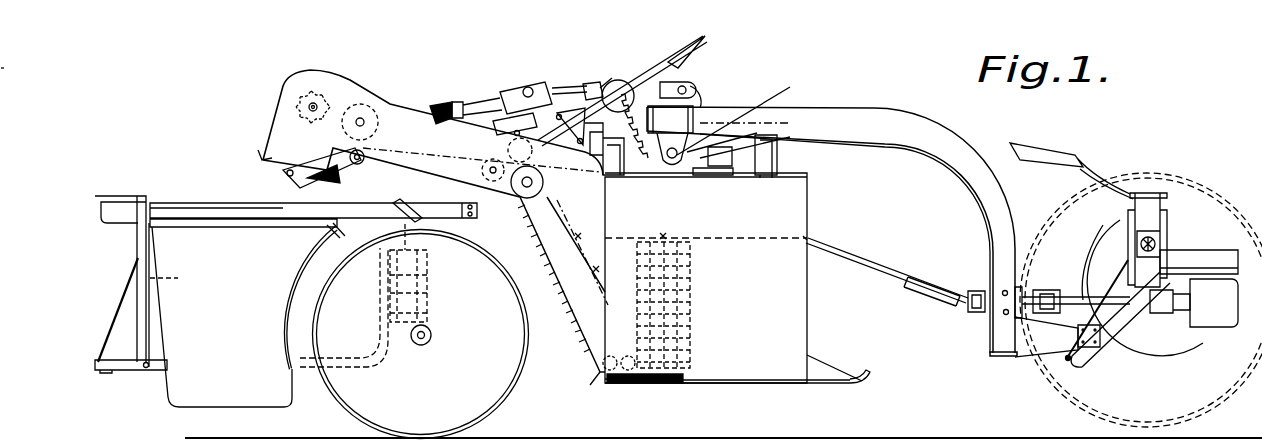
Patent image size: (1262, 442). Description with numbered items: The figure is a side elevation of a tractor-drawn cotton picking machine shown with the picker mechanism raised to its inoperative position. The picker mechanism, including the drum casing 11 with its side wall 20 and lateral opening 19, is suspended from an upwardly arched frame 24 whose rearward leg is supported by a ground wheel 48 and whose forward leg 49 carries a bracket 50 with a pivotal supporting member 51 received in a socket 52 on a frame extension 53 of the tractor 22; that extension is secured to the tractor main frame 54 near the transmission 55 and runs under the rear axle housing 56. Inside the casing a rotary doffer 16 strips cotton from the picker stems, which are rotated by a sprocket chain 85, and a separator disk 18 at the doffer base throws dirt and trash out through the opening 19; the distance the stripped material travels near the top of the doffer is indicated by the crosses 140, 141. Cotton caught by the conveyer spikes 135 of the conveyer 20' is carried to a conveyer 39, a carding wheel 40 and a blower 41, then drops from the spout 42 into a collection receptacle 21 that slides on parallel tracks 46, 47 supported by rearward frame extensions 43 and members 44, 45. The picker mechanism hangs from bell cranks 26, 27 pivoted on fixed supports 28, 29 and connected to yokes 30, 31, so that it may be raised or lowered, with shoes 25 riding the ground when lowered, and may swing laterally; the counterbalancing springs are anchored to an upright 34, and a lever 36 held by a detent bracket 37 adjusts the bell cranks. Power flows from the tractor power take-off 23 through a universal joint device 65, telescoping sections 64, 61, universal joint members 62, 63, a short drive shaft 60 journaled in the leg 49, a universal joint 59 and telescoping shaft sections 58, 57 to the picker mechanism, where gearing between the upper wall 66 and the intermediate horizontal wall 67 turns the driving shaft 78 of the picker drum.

The drum casing 11 is at (808, 328).
The rotary doffer 16 is at (693, 310).
The separator disk 18 is at (612, 385).
The lateral opening 19 is at (592, 380).
The side wall 20 is at (726, 278).
The conveyer 20' is at (441, 260).
The collection receptacle 21 is at (193, 315).
The tractor 22 is at (1140, 192).
The power take-off 23 is at (1210, 322).
The arched frame 24 is at (848, 110).
The shoe 25 is at (870, 378).
The bell crank 26 is at (700, 92).
The bell crank 27 is at (533, 78).
The fixed frame support 28 is at (470, 92).
The fixed frame support 29 is at (680, 160).
The yoke 30 is at (660, 140).
The yoke 31 is at (630, 176).
The upright 34 is at (855, 172).
The lever 36 is at (680, 50).
The detent bracket 37 is at (608, 78).
The conveyer 39 is at (445, 152).
The carding wheel 40 is at (372, 104).
The blower 41 is at (292, 97).
The spout 42 is at (258, 152).
The rearward frame extension 43 is at (337, 176).
The frame member 44 is at (120, 297).
The frame member 45 is at (150, 372).
The track 46 is at (303, 237).
The track 47 is at (150, 215).
The ground wheel 48 is at (527, 372).
The forward leg 49 is at (1003, 257).
The bracket 50 is at (1035, 340).
The pivotal supporting member 51 is at (1040, 375).
The socket 52 is at (575, 84).
The frame extension 53 is at (440, 106).
The main frame 54 is at (1200, 265).
The transmission 55 is at (500, 88).
The rear axle housing 56 is at (1155, 212).
The telescoping shaft section 57 is at (875, 262).
The telescoping shaft section 58 is at (330, 73).
The universal joint 59 is at (975, 313).
The drive shaft 60 is at (985, 292).
The telescoping shaft section 61 is at (1091, 260).
The universal joint member 62 is at (1047, 290).
The universal joint member 63 is at (1020, 290).
The telescoping section 64 is at (1120, 292).
The universal joint device 65 is at (1160, 315).
The upper wall 66 is at (780, 172).
The intermediate horizontal wall 67 is at (825, 247).
The driving shaft 78 is at (760, 105).
The sprocket chain 85 is at (765, 385).
The conveyer spike 135 is at (558, 290).
The cross 140 is at (532, 226).
The cross 141 is at (668, 236).